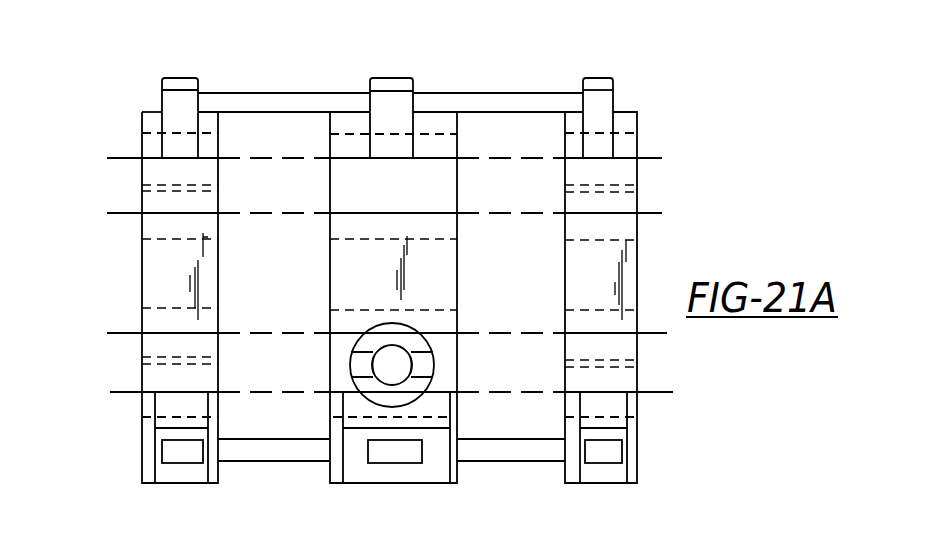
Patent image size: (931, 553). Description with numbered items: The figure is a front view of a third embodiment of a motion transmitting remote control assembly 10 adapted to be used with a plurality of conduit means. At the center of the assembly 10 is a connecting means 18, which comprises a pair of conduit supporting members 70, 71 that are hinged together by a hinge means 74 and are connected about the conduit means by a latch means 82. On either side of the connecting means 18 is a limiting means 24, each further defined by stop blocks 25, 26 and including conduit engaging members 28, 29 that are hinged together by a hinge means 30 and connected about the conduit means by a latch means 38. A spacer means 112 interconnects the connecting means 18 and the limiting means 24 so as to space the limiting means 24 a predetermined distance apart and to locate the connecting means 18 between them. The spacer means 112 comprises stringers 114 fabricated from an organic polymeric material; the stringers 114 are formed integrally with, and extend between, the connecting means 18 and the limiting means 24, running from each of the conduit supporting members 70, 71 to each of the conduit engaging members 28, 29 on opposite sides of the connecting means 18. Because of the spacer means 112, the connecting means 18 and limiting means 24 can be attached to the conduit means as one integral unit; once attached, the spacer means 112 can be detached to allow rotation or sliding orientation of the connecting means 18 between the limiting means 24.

The motion transmitting remote control assembly 10 is at (714, 64).
The connecting means 18 is at (436, 87).
The limiting means 24 is at (136, 124).
The stop block 25 is at (428, 413).
The stop block 26 is at (143, 375).
The conduit engaging member 28 is at (426, 253).
The conduit engaging member 29 is at (153, 322).
The hinge means 30 is at (210, 262).
The latch means 38 is at (174, 73).
The conduit supporting member 70 is at (390, 275).
The conduit supporting member 71 is at (346, 190).
The hinge means 74 is at (350, 297).
The latch means 82 is at (401, 491).
The spacer means 112 is at (292, 89).
The stringers 114 is at (250, 100).